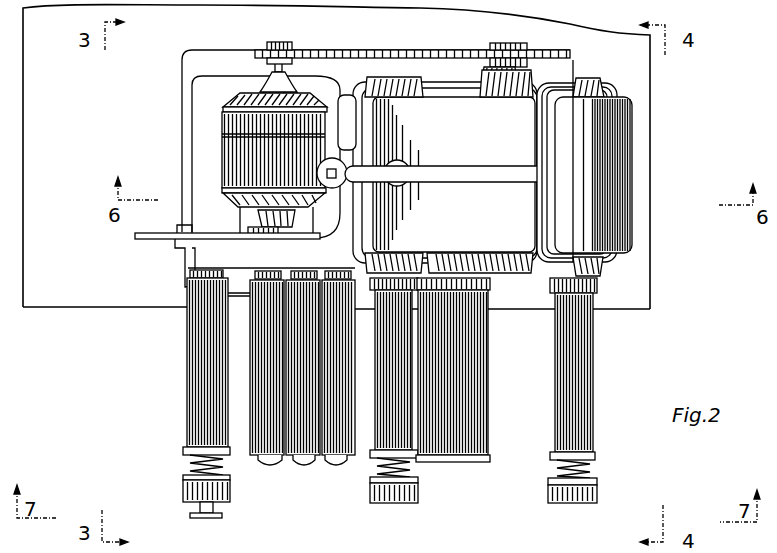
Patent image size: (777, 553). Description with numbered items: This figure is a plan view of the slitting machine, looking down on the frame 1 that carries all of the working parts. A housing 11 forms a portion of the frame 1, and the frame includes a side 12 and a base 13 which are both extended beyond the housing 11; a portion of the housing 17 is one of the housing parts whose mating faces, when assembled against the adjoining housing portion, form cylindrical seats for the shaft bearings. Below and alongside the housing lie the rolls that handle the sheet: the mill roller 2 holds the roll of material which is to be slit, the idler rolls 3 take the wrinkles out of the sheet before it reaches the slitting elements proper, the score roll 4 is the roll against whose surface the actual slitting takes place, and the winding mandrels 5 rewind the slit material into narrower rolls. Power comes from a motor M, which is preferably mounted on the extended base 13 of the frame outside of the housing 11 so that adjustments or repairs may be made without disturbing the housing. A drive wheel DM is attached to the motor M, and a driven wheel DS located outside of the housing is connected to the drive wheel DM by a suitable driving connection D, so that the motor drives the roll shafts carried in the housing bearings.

The frame 1 is at (441, 145).
The mill roller 2 is at (200, 402).
The idler rolls 3 is at (265, 432).
The score roll 4 is at (460, 405).
The winding mandrels 5 is at (385, 402).
The housing 11 is at (440, 115).
The side of the frame 12 is at (240, 257).
The base of the frame 13 is at (205, 115).
The portion of the housing 17 is at (597, 128).
The driving connection D is at (390, 57).
The drive wheel DM is at (282, 56).
The driven wheel DS is at (503, 62).
The motor M is at (248, 150).